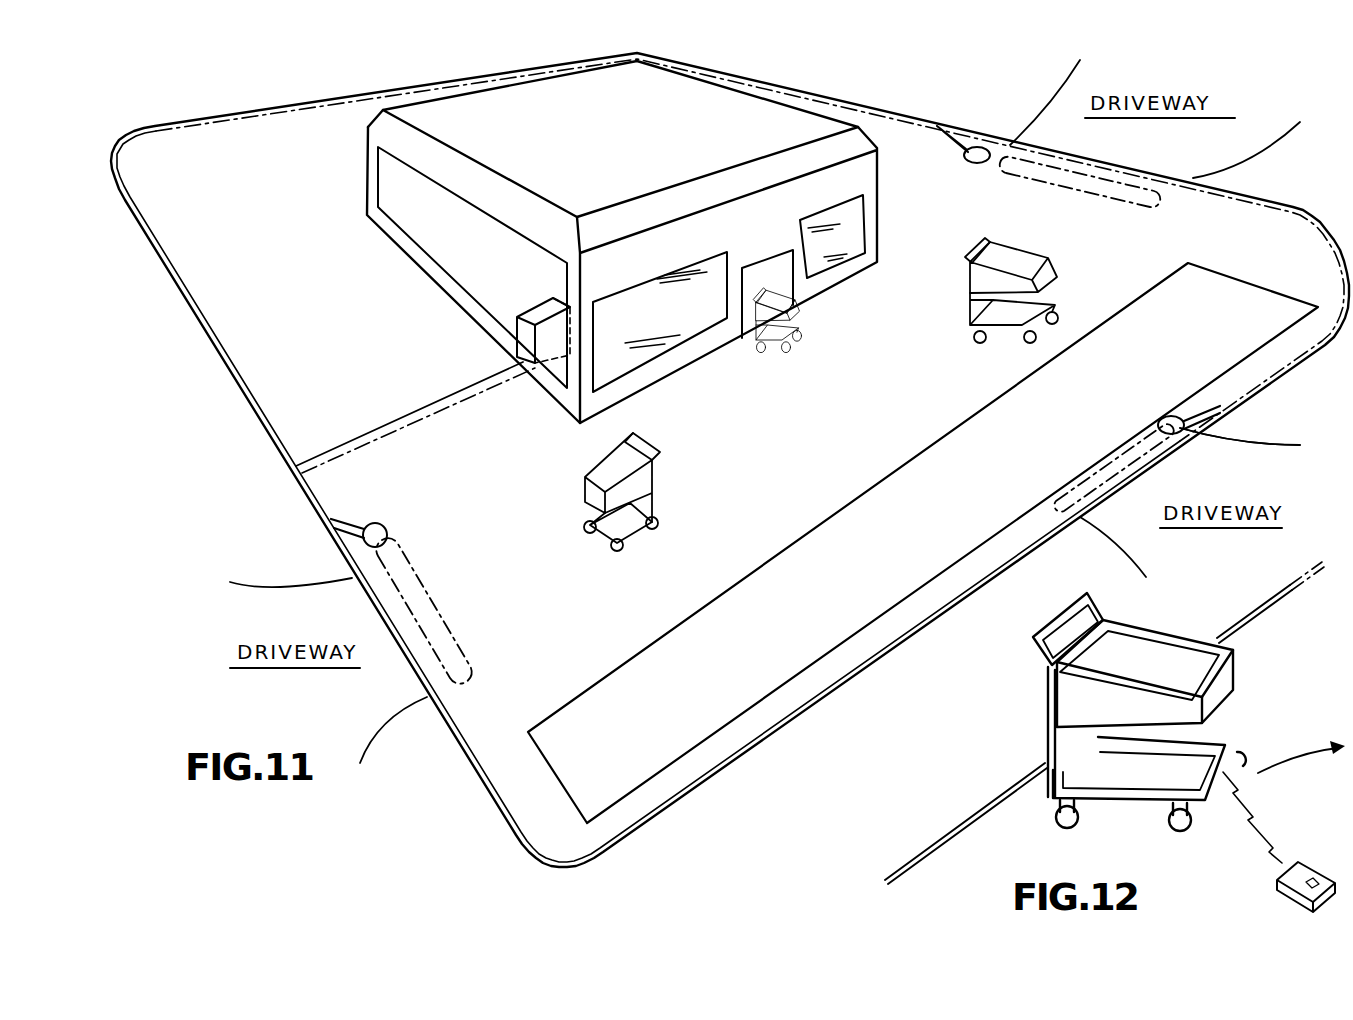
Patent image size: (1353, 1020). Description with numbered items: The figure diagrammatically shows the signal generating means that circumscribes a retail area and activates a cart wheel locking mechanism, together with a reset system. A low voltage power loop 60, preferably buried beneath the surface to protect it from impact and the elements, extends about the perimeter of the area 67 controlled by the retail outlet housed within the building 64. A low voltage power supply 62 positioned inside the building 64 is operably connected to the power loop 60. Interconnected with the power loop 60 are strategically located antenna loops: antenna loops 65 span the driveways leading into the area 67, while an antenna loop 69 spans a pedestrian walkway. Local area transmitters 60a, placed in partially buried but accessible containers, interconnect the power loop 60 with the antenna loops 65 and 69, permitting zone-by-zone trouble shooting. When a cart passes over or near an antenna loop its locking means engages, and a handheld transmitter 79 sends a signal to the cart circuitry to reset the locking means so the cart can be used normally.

In FIG. 11, the low voltage power loop 60 is at (263, 425).
In FIG. 11, the local area transmitter 60a is at (388, 526).
In FIG. 11, the low voltage power supply 62 is at (517, 327).
In FIG. 11, the building 64 is at (387, 175).
In FIG. 11, the antenna loop 65 is at (437, 616).
In FIG. 11, the area 67 is at (846, 422).
In FIG. 11, the antenna loop 69 is at (1115, 455).
In FIG. 12, the handheld transmitter 79 is at (1290, 898).